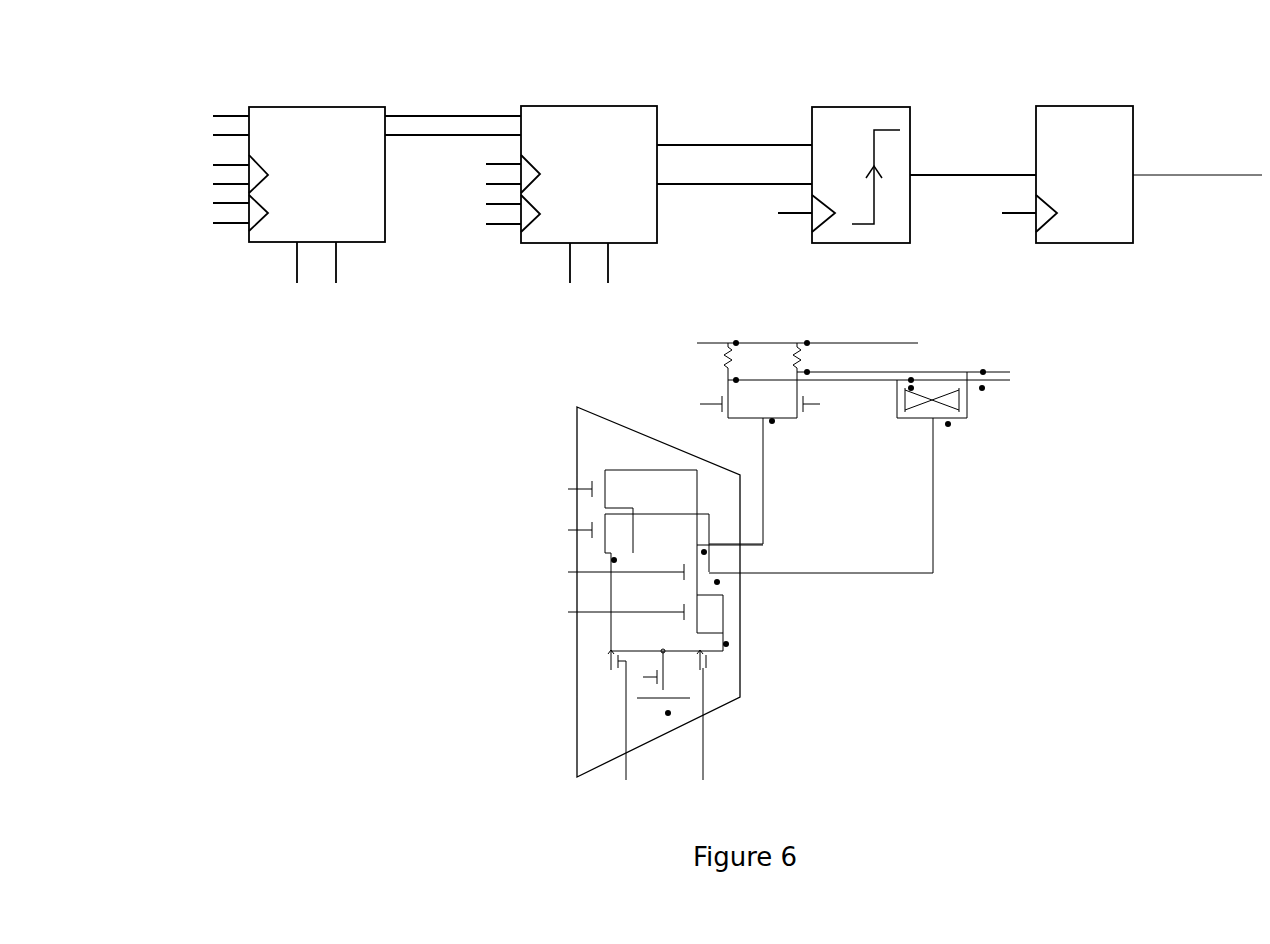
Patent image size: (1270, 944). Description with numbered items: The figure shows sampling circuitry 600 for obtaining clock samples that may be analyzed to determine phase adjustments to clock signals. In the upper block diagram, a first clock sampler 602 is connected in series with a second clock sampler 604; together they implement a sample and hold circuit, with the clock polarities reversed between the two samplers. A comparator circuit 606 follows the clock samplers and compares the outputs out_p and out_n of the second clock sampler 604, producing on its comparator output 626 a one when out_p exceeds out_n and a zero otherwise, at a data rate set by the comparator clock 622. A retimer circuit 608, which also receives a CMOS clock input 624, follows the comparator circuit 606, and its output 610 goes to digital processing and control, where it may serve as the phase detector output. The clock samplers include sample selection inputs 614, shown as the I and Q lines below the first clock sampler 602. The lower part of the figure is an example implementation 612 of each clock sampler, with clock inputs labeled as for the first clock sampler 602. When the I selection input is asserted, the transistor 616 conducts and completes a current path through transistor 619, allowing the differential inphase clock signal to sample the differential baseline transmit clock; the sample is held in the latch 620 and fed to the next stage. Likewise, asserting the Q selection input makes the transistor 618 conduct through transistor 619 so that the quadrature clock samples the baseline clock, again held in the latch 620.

The sampling circuitry 600 is at (150, 80).
The first clock sampler 602 is at (272, 232).
The second clock sampler 604 is at (545, 233).
The comparator circuit 606 is at (842, 234).
The retimer circuit 608 is at (1083, 234).
The output to digital processing and control 610 is at (1222, 174).
The example implementation of clock sampler 612 is at (615, 598).
The sample selection inputs 614 is at (310, 318).
The transistor 616 is at (624, 671).
The transistor 618 is at (706, 674).
The transistor 619 is at (660, 682).
The latch 620 is at (682, 361).
The comparator clock 622 is at (796, 214).
The CMOS clock input to retimer 624 is at (1022, 214).
The comparator output 626 is at (986, 174).